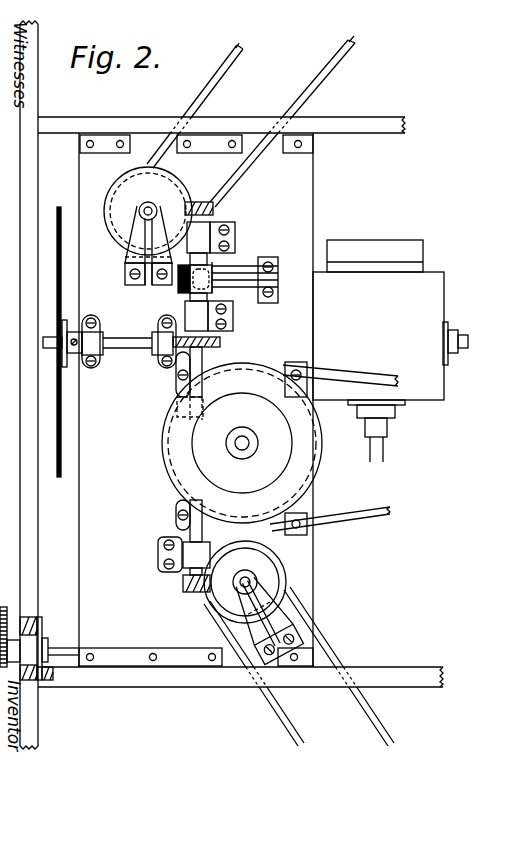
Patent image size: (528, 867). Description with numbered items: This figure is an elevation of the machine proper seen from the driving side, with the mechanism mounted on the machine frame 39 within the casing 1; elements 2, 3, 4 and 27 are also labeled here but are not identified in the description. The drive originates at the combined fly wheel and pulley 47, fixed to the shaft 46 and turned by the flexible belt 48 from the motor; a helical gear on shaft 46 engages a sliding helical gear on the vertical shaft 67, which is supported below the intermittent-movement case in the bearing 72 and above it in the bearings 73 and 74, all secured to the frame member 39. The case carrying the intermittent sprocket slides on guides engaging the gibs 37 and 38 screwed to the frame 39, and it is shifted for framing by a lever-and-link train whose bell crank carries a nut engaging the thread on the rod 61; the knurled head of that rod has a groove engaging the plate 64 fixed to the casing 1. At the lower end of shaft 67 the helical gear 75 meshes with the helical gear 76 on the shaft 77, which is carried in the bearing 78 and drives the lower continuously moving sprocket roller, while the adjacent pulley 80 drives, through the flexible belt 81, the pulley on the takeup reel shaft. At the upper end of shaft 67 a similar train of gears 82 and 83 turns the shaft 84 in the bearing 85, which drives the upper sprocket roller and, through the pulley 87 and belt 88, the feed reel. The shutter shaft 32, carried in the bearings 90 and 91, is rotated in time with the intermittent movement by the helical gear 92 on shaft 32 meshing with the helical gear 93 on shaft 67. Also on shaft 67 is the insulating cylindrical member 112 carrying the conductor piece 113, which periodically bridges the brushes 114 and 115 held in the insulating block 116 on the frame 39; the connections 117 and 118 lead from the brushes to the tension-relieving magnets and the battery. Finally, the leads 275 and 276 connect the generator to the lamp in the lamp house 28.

The casing 1 is at (57, 252).
The upper frame rail 2 is at (370, 87).
The lower frame rail 3 is at (198, 720).
The frame section 4 is at (400, 605).
The side plate 27 is at (329, 400).
The lamp house 28 is at (425, 300).
The shutter shaft 32 is at (120, 348).
The gib 37 is at (305, 506).
The gib 38 is at (178, 508).
The machine frame 39 is at (83, 531).
The shaft 46 is at (242, 447).
The combined fly wheel and pulley 47 is at (165, 483).
The flexible belt 48 is at (355, 507).
The threaded rod 61 is at (65, 658).
The plate 64 is at (48, 622).
The shaft 67 is at (215, 364).
The bearing 72 is at (180, 565).
The bearing 73 is at (185, 312).
The bearing 74 is at (205, 235).
The helical gear 75 is at (189, 590).
The helical gear 76 is at (225, 603).
The shaft 77 is at (245, 580).
The bearing 78 is at (268, 596).
The pulley 80 is at (278, 556).
The flexible belt 81 is at (340, 645).
The gear 82 is at (199, 202).
The gear 83 is at (120, 226).
The shaft 84 is at (150, 208).
The bearing 85 is at (128, 258).
The pulley 87 is at (116, 187).
The belt 88 is at (193, 90).
The bearing 90 is at (98, 339).
The bearing 91 is at (160, 335).
The helical gear 92 is at (218, 349).
The helical gear 93 is at (164, 366).
The insulating cylindrical member 112 is at (178, 287).
The conductor piece 113 is at (196, 283).
The brush 114 is at (246, 288).
The brush 115 is at (246, 270).
The insulating block 116 is at (280, 277).
The connection 117 is at (287, 262).
The connection 118 is at (280, 295).
The lead 275 is at (369, 452).
The lead 276 is at (384, 452).